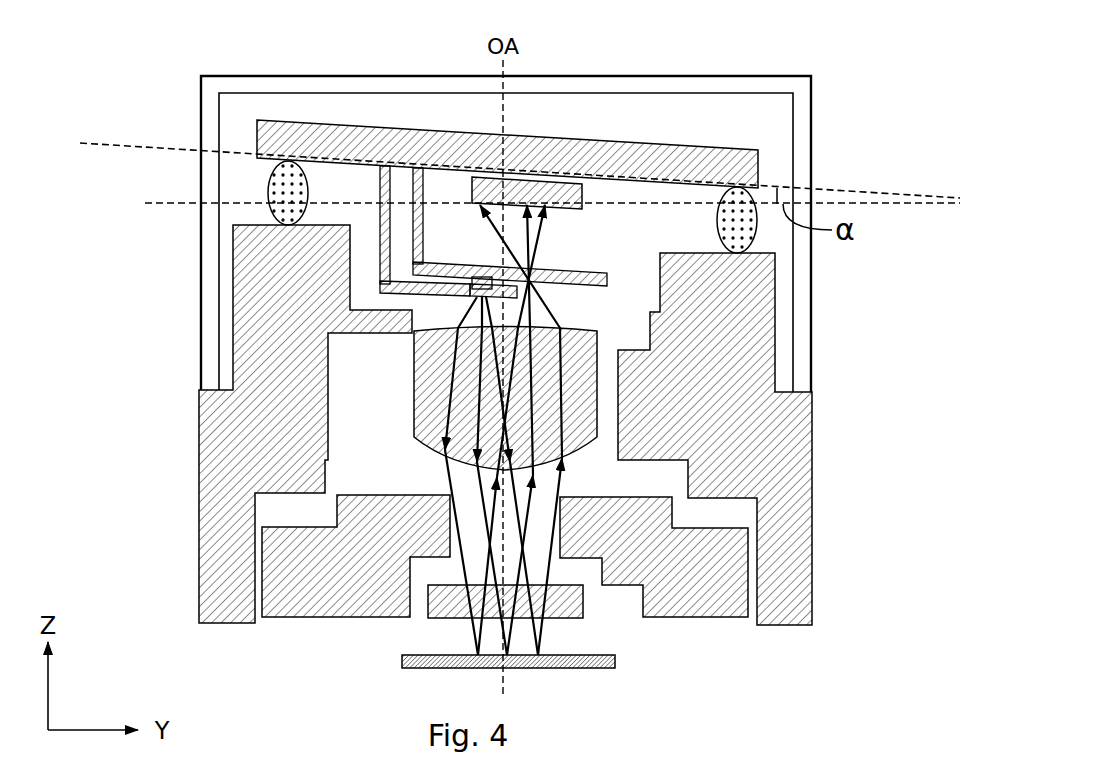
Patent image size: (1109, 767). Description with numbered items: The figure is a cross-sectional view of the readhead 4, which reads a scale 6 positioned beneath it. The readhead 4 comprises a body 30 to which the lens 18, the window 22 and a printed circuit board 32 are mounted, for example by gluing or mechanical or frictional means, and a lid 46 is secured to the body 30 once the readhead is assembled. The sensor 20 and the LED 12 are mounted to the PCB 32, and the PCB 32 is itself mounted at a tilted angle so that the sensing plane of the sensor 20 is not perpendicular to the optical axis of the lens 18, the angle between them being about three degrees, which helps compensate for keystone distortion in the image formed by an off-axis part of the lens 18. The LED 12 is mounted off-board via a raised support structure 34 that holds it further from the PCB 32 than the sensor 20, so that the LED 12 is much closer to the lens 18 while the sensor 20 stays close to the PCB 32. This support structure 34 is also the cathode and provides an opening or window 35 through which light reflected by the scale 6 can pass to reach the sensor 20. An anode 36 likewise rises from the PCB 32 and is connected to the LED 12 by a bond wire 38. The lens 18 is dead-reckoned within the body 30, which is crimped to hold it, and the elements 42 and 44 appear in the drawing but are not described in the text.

The readhead 4 is at (864, 69).
The scale 6 is at (612, 661).
The LED 12 is at (277, 224).
The lens 18 is at (420, 361).
The sensor 20 is at (563, 197).
The window 22 is at (442, 612).
The body 30 is at (285, 454).
The printed circuit board 32 is at (268, 140).
The support structure / cathode 34 is at (414, 199).
The opening/window 35 is at (540, 274).
The anode 36 is at (384, 289).
The bond wire 38 is at (457, 300).
The actuator / bearing element 42 is at (270, 193).
The actuator / bearing element 44 is at (752, 235).
The lid 46 is at (378, 87).